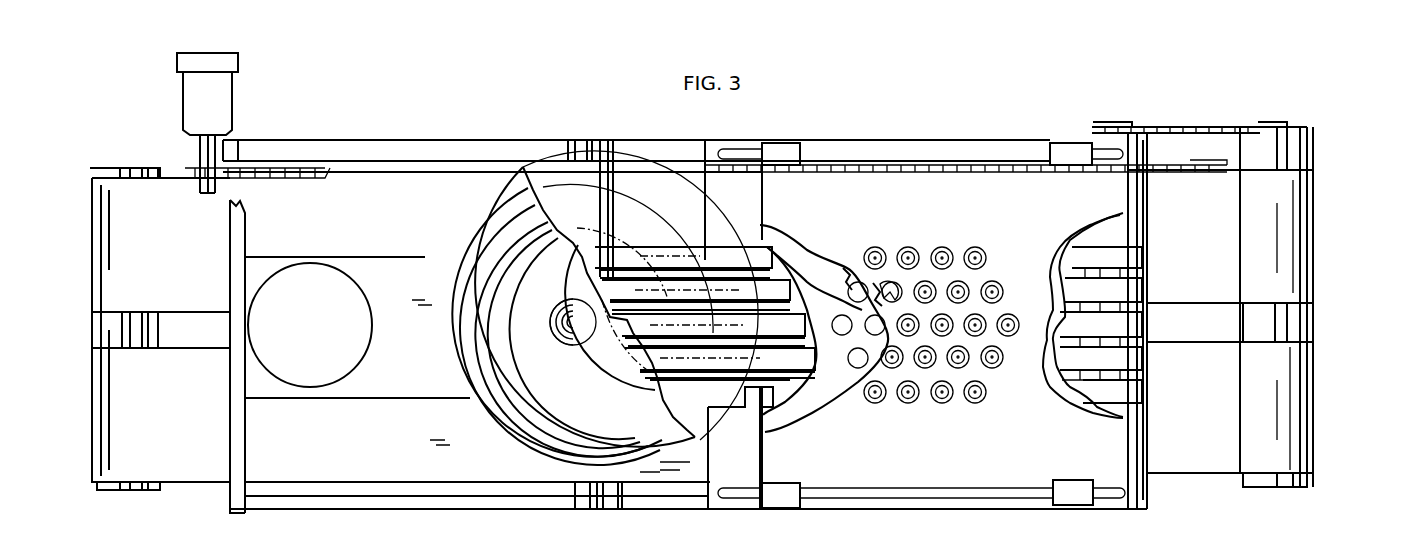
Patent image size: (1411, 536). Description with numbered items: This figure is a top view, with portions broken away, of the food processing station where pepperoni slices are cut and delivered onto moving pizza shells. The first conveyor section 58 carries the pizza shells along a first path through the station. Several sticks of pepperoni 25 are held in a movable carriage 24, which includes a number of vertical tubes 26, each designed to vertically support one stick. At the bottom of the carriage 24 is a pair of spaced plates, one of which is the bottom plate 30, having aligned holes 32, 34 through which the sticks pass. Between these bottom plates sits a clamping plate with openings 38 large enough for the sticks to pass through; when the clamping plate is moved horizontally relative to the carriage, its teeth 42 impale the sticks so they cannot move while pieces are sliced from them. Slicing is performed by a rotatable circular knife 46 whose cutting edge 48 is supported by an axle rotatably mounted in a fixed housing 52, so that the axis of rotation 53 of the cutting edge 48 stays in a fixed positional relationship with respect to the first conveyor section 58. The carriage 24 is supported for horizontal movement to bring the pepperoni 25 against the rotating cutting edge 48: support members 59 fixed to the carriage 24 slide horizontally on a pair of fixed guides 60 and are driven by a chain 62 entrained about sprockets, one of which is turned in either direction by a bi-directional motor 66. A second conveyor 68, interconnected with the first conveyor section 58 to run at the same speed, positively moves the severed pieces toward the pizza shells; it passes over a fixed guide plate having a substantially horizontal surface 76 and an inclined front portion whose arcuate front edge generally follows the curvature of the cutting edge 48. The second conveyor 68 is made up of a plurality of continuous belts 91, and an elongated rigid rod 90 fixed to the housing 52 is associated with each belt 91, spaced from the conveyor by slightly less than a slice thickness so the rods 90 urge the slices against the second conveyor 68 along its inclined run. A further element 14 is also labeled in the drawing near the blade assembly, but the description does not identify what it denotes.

The movable carriage 24 is at (952, 132).
The pepperoni 25 is at (942, 252).
The vertical tubes 26 is at (982, 266).
The bottom plate 30 is at (812, 337).
The hole 32 is at (868, 390).
The hole 34 is at (848, 335).
The openings 38 is at (760, 278).
The teeth 42 is at (852, 270).
The rotatable circular knife 46 is at (532, 330).
The cutting edge 48 is at (745, 330).
The fixed housing 52 is at (362, 265).
The axis of rotation 53 is at (566, 300).
The first conveyor section 58 is at (1313, 345).
The support members 59 is at (780, 145).
The fixed guides 60 is at (938, 489).
The chain 62 is at (230, 178).
The bi-directional motor 66 is at (232, 100).
The second conveyor 68 is at (1153, 262).
The horizontal surface 76 is at (768, 400).
The elongated rods 90 is at (640, 383).
The continuous belts 91 is at (1158, 276).
The blade 14 is at (683, 259).